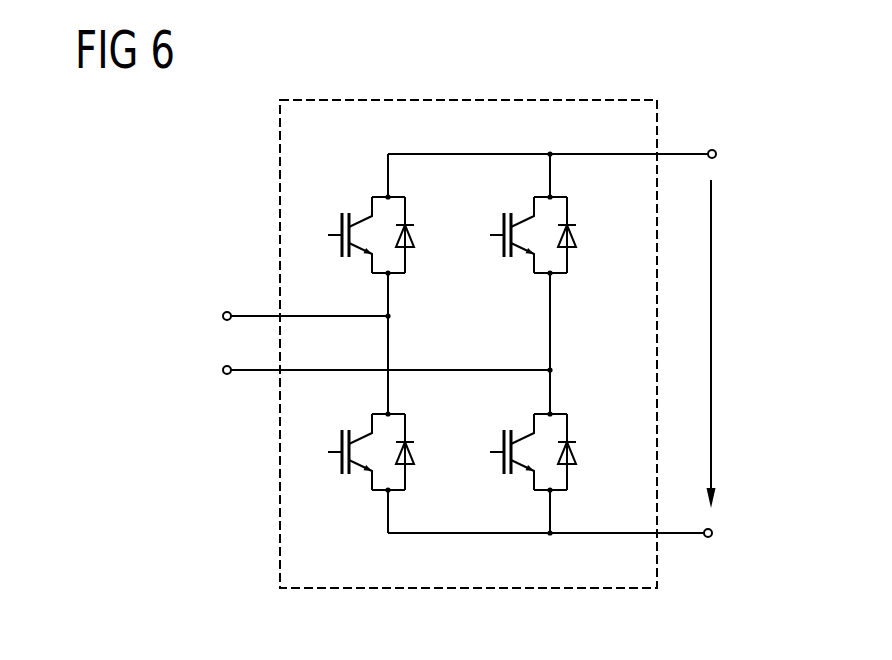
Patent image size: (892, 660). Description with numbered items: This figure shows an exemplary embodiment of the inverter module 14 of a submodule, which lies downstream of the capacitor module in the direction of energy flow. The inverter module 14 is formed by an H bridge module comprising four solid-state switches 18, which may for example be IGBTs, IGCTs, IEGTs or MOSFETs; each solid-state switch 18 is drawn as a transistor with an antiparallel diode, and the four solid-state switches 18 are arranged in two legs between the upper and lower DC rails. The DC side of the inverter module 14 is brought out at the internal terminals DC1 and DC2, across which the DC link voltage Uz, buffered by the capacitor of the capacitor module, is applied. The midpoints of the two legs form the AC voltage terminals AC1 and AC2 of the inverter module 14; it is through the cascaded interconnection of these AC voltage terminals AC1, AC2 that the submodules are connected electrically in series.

The inverter module 14 is at (428, 353).
The solid-state switch 18 is at (438, 325).
The AC voltage terminal AC1 is at (222, 317).
The AC voltage terminal AC2 is at (222, 371).
The internal terminal DC1 is at (752, 154).
The internal terminal DC2 is at (750, 533).
The DC link voltage Uz is at (748, 342).